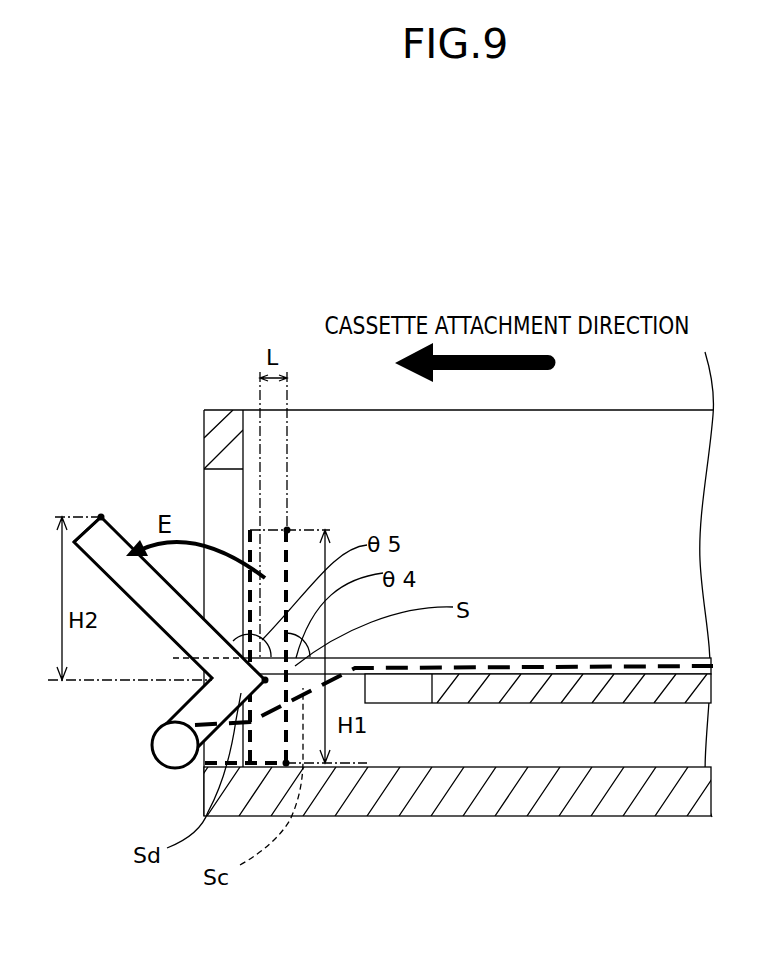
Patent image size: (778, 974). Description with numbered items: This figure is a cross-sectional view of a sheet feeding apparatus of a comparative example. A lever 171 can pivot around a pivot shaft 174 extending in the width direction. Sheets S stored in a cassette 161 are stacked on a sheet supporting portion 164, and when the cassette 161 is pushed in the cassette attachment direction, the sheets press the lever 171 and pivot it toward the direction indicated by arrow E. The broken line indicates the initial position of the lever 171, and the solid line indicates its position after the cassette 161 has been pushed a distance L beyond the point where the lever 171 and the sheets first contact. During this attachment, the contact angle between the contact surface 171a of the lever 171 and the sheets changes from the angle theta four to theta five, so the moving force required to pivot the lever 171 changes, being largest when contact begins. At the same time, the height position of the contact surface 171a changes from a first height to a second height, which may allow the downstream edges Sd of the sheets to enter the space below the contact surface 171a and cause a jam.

The cassette 161 is at (463, 800).
The sheet supporting portion 164 is at (605, 698).
The lever 171 is at (110, 540).
The contact surface 171a is at (168, 573).
The pivot shaft 174 is at (175, 745).